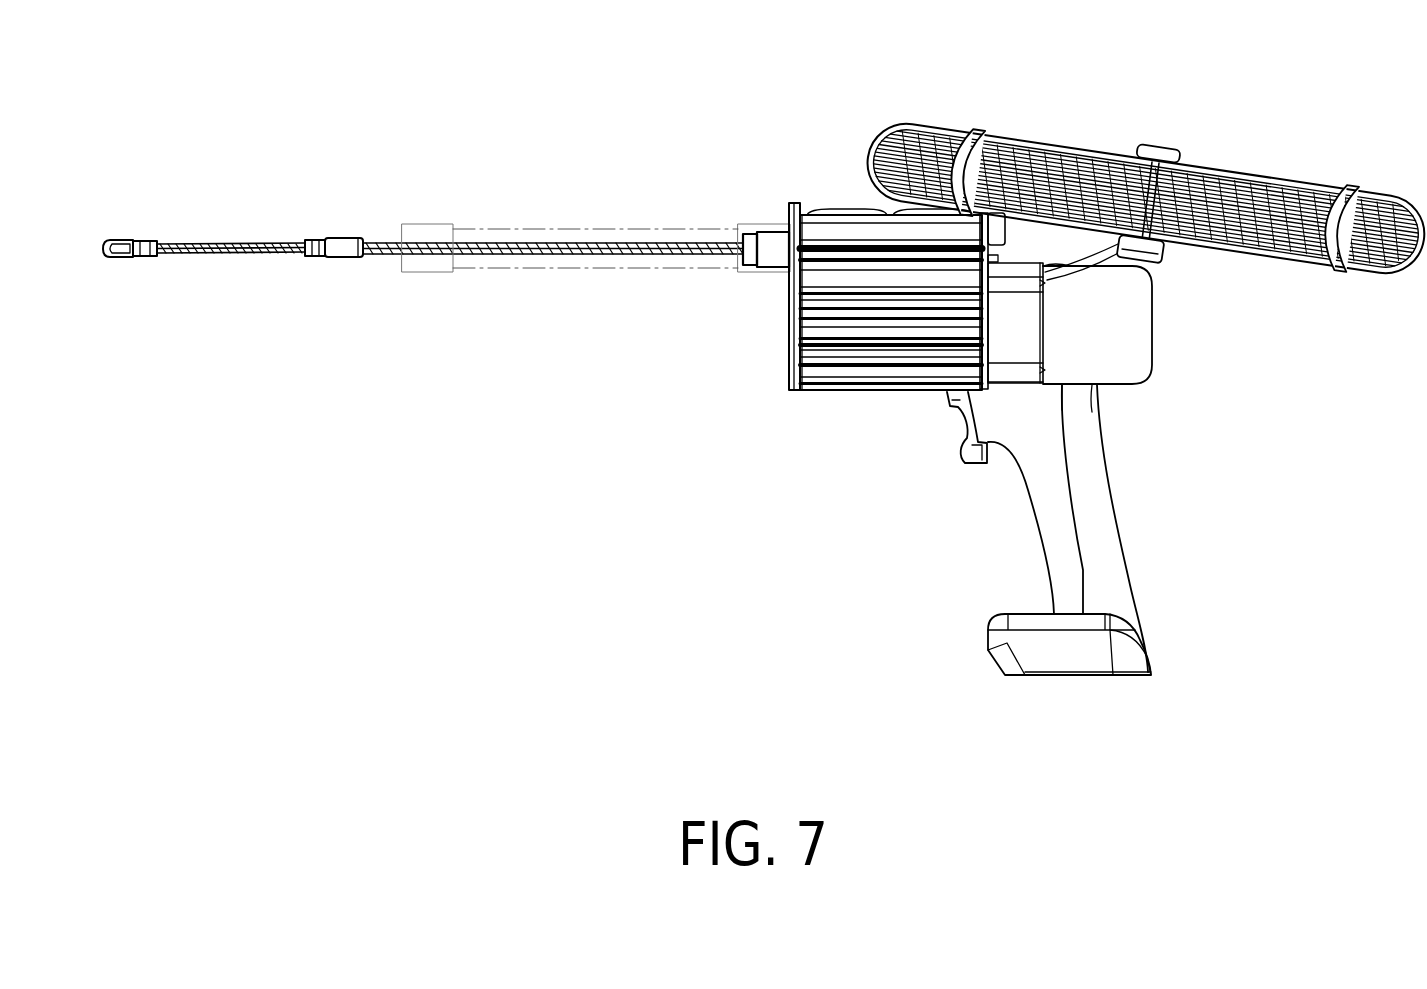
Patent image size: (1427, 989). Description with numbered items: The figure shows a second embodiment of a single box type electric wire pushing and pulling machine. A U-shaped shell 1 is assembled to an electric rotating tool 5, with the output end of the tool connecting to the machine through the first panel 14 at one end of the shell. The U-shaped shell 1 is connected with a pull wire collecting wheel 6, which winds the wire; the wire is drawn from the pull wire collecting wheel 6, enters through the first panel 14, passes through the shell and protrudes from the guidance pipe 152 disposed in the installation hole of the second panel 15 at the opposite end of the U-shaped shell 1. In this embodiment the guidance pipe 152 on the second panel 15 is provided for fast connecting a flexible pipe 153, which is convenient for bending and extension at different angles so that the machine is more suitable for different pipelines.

The U-shaped shell 1 is at (855, 378).
The electric rotating tool 5 is at (1103, 522).
The pull wire collecting wheel 6 is at (1033, 140).
The first panel 14 is at (987, 317).
The second panel 15 is at (788, 293).
The guidance pipe 152 is at (767, 248).
The flexible pipe 153 is at (566, 230).